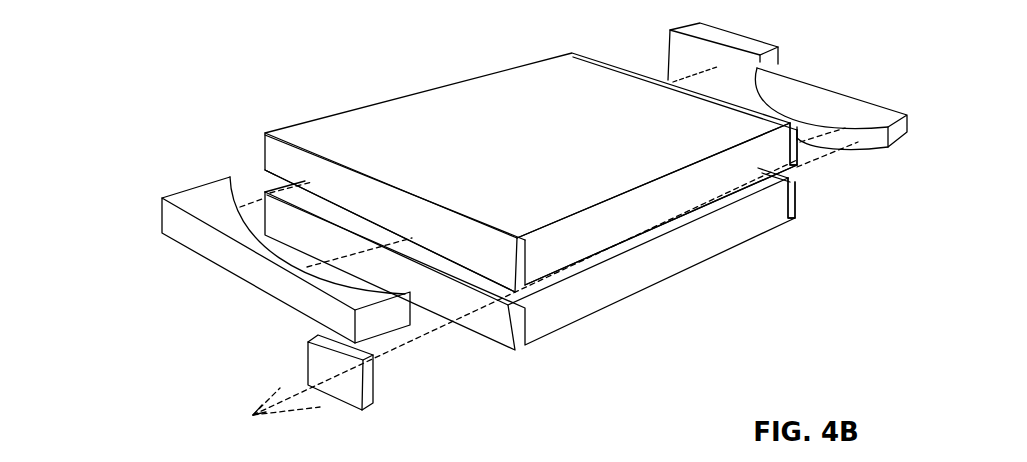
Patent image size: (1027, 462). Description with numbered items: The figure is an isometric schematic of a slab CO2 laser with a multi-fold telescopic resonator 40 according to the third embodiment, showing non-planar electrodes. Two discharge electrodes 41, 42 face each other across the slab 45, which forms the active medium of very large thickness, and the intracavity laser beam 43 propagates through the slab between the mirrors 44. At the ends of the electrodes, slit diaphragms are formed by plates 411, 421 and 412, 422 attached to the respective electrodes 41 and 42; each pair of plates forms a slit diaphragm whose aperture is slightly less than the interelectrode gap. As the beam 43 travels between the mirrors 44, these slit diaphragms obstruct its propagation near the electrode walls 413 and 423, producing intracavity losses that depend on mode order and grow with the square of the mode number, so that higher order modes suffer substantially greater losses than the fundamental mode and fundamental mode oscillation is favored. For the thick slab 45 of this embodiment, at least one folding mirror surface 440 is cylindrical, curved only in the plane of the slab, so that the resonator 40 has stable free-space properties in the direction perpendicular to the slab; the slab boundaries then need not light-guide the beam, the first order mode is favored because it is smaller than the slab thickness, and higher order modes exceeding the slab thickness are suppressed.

The multi-fold telescopic resonator 40 is at (213, 65).
The electrode 41 is at (642, 273).
The electrode 42 is at (572, 238).
The intracavity laser beam 43 is at (412, 345).
The mirrors 44 is at (313, 353).
The slab 45 is at (275, 183).
The plate 411 is at (508, 322).
The plate 412 is at (796, 208).
The electrode wall 413 is at (687, 230).
The plate 421 is at (500, 263).
The plate 422 is at (802, 150).
The electrode wall 423 is at (697, 202).
The cylindrical folding mirror surface 440 is at (870, 138).